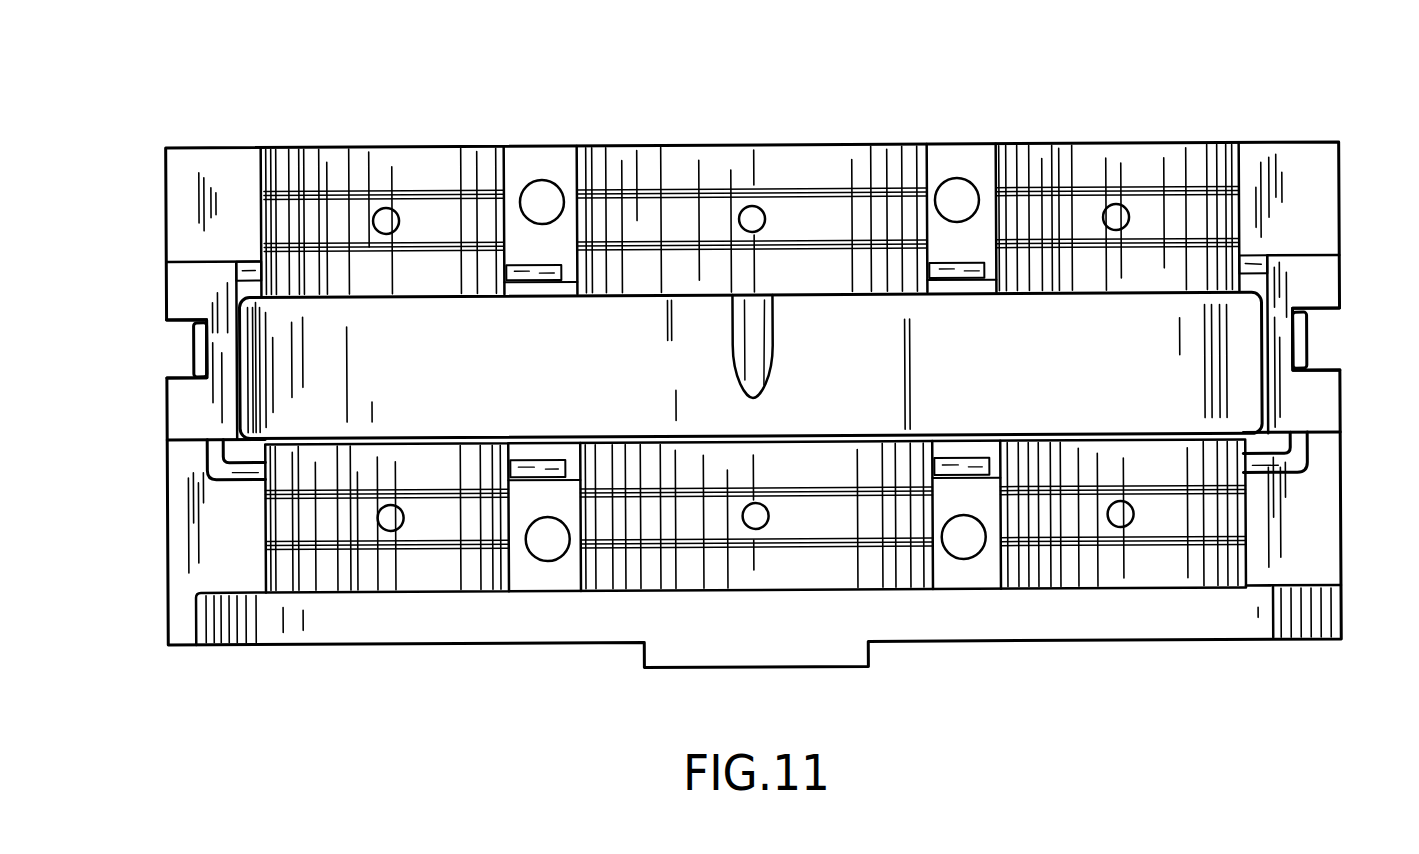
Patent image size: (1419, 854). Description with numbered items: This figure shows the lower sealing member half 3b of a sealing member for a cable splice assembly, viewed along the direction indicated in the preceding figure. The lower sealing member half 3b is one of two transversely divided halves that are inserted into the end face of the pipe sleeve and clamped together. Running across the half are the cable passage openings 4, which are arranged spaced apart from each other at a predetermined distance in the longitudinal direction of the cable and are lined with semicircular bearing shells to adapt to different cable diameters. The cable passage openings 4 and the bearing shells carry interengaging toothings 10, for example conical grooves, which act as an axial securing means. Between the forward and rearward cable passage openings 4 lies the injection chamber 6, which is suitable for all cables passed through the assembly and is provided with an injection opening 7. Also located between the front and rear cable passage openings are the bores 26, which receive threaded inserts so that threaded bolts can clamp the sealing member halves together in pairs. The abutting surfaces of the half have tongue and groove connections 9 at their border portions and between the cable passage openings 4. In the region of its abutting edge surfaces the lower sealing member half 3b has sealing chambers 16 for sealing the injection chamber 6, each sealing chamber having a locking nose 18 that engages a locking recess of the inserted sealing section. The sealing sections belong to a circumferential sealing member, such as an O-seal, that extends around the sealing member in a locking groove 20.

The lower sealing member half 3b is at (1276, 146).
The cable passage openings 4 is at (1043, 158).
The interengaging toothings 10 is at (333, 250).
The bores 26 is at (552, 530).
The injection chamber 6 is at (1165, 411).
The injection opening 7 is at (775, 318).
The tongue and groove connections 9 is at (227, 460).
The locking groove 20 is at (183, 333).
The locking nose 18 is at (192, 357).
The sealing chambers 16 is at (202, 408).